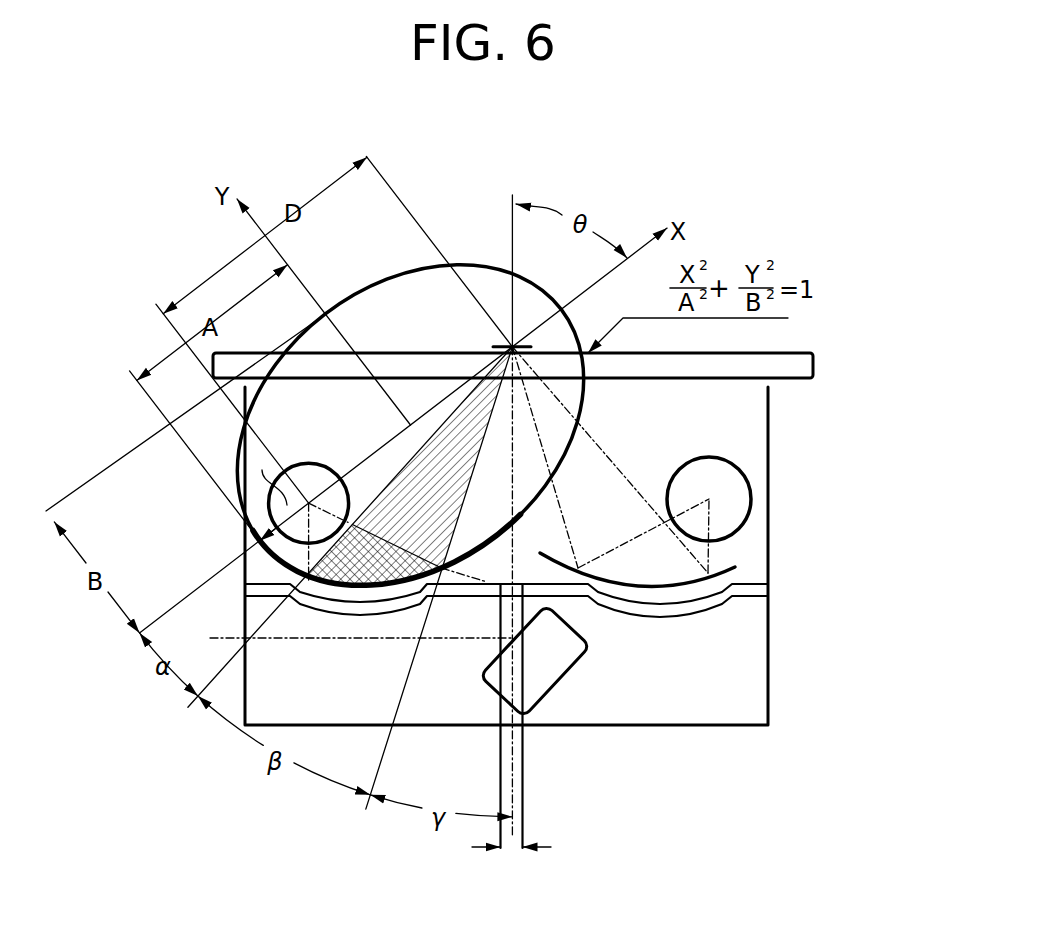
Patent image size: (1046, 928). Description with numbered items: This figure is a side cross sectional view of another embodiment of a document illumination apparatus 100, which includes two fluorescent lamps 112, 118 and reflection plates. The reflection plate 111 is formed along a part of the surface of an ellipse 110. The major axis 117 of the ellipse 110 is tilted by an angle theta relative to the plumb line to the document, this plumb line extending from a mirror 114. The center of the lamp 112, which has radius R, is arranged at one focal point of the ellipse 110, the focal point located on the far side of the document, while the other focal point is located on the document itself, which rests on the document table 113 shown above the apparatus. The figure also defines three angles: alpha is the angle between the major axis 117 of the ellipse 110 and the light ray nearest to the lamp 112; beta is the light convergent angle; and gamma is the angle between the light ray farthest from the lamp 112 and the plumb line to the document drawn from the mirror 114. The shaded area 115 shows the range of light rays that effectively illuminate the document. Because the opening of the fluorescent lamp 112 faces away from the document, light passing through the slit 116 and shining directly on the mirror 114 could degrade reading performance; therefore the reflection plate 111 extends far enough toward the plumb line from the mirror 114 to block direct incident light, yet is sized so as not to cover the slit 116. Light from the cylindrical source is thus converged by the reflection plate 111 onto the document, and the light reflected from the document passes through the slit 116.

The document illumination apparatus 100 is at (709, 178).
The ellipse 110 is at (463, 264).
The reflection plate 111 is at (352, 592).
The fluorescent lamp 112 is at (305, 465).
The contact glass 113 is at (800, 365).
The mirror 114 is at (557, 688).
The shaded area 115 is at (403, 477).
The slit 116 is at (508, 849).
The major axis 117 is at (434, 404).
The fluorescent lamp 118 is at (712, 466).